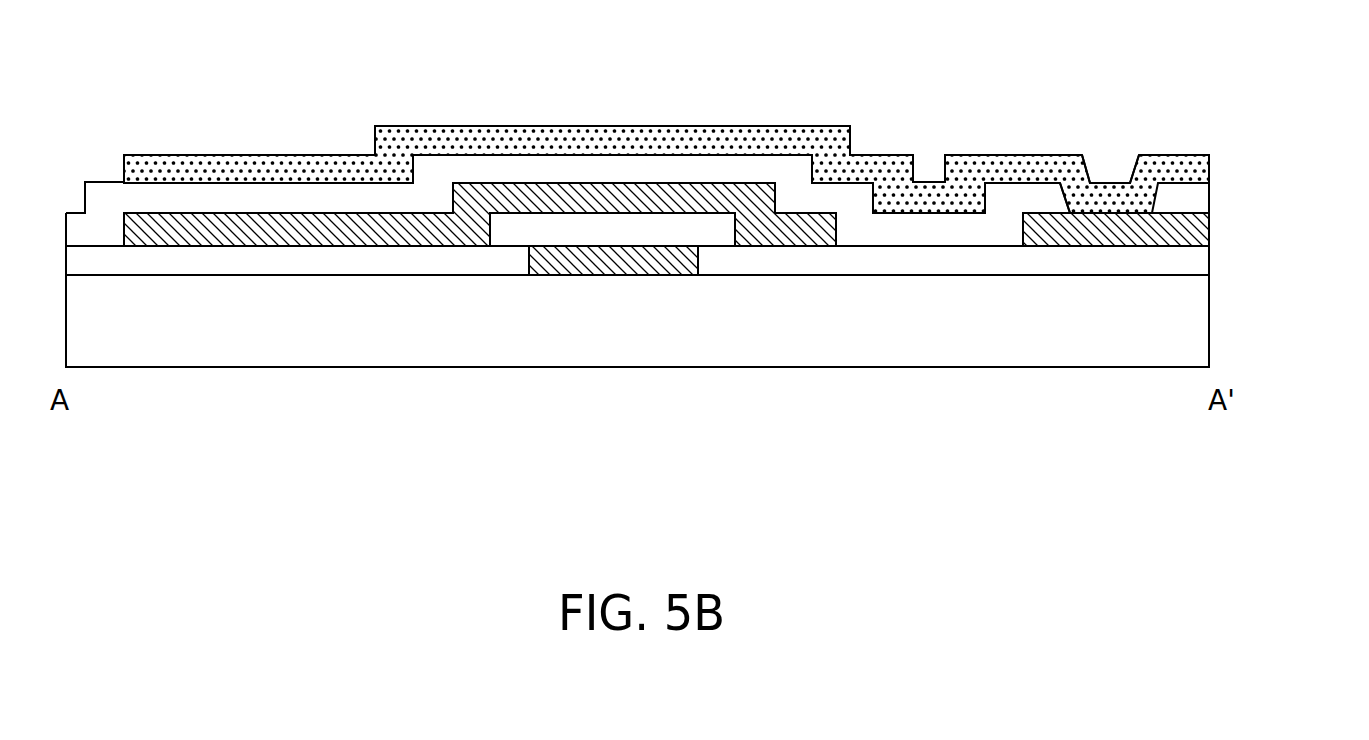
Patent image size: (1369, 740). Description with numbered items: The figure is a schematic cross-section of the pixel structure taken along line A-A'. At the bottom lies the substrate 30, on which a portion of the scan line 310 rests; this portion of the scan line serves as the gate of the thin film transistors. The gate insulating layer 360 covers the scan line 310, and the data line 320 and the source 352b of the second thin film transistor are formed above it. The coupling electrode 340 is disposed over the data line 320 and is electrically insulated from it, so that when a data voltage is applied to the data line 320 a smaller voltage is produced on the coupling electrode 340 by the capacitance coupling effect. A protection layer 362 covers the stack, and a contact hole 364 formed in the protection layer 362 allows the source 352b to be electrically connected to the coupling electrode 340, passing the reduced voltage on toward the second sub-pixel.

The substrate 30 is at (1172, 328).
The scan line 310 is at (620, 260).
The data line 320 is at (310, 232).
The coupling electrode 340 is at (607, 147).
The source 352b is at (1175, 232).
The gate insulating layer 360 is at (1175, 262).
The protection layer 362 is at (106, 205).
The contact hole 364 is at (1070, 203).